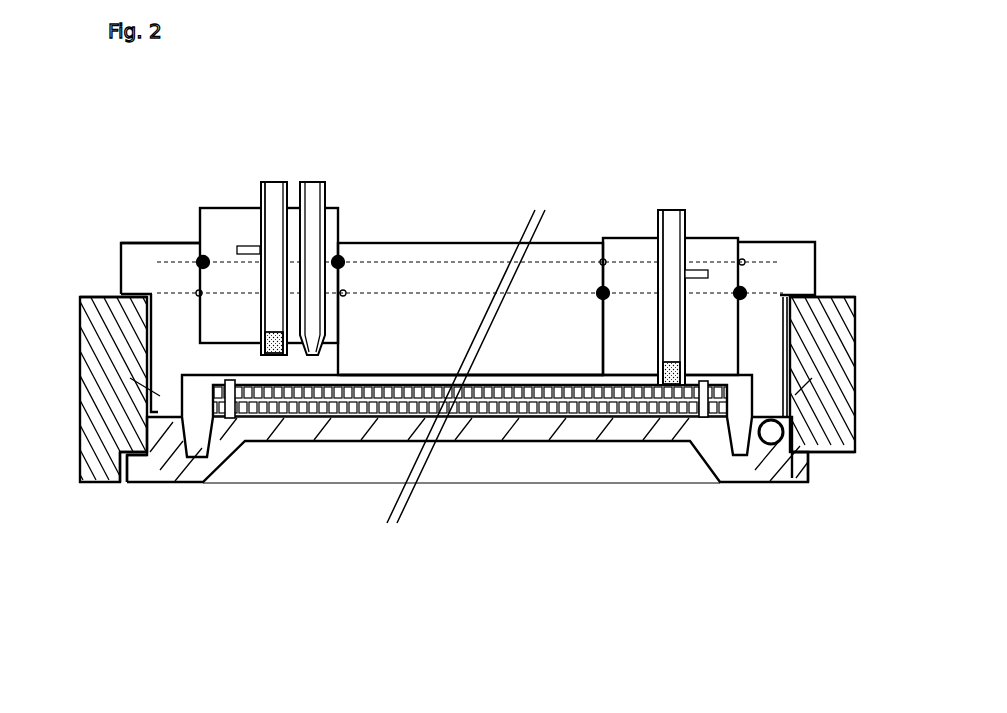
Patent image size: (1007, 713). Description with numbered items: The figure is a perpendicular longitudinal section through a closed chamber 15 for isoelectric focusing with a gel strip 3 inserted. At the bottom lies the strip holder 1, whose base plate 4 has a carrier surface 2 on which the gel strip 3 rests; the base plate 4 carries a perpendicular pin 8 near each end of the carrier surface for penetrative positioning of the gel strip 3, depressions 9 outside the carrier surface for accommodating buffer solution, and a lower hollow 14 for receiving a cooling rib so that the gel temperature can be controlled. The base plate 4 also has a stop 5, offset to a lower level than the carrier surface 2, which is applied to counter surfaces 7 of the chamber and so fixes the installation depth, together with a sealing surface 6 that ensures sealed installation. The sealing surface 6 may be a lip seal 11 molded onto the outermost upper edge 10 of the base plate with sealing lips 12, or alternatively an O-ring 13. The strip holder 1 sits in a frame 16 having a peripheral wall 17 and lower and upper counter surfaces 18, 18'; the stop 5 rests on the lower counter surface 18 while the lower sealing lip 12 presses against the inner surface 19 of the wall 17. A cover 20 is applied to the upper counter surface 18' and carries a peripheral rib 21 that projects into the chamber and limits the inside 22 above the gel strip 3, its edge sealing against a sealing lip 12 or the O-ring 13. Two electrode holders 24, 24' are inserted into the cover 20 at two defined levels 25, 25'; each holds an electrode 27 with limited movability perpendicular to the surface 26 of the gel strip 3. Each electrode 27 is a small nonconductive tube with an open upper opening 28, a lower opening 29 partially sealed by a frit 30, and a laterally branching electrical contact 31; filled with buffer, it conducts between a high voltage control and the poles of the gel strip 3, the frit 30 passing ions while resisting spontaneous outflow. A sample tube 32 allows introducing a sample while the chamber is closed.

The strip holder 1 is at (508, 547).
The carrier surface 2 is at (409, 408).
The gel strip 3 is at (535, 405).
The base plate 4 is at (497, 445).
The stop 5 is at (135, 472).
The sealing surface 6 is at (138, 440).
The counter surfaces 7 is at (144, 462).
The perpendicular pin 8 is at (229, 414).
The depressions 9 is at (201, 443).
The outermost upper edge 10 is at (145, 422).
The lip seal 11 is at (140, 437).
The sealing lips 12 is at (147, 426).
The O-ring 13 is at (777, 434).
The lower hollow 14 is at (447, 467).
The chamber 15 is at (82, 178).
The frame 16 is at (72, 261).
The peripheral wall 17 is at (468, 374).
The lower counter surface 18 is at (460, 468).
The upper counter surface 18' is at (476, 246).
The inner surface 19 is at (151, 366).
The cover 20 is at (433, 340).
The peripheral rib 21 is at (160, 398).
The inside 22 is at (374, 384).
The electrode holder 24 is at (269, 275).
The electrode holder 24' is at (670, 306).
The level 25 is at (468, 232).
The level 25' is at (470, 248).
The surface 26 is at (563, 378).
The electrode 27 is at (267, 188).
The upper opening 28 is at (272, 182).
The lower opening 29 is at (273, 352).
The frit 30 is at (273, 352).
The electrical contact 31 is at (250, 245).
The sample tube 32 is at (318, 190).